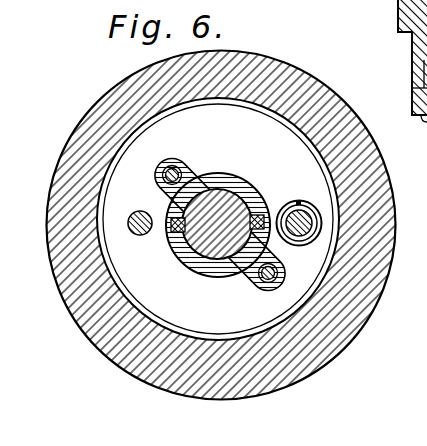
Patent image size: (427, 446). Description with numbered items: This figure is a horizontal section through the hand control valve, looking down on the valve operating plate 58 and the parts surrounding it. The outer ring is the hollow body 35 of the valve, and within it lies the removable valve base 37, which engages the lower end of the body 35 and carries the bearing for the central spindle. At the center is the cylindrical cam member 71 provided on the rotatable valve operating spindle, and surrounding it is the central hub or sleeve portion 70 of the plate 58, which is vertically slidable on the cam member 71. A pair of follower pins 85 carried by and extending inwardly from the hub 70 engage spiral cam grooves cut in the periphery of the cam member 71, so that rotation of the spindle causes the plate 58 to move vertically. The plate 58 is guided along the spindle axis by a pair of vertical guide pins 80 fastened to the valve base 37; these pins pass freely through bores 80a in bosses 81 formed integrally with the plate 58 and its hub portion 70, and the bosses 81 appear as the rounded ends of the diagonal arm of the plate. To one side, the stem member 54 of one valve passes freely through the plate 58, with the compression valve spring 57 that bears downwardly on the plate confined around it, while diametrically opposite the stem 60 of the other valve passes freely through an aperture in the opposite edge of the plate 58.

The hollow body 35 is at (299, 78).
The removable valve base 37 is at (120, 157).
The stem member 54 is at (301, 212).
The compression valve spring 57 is at (300, 238).
The valve operating plate 58 is at (322, 245).
The stem 60 is at (136, 235).
The hub or sleeve portion 70 is at (194, 259).
The cylindrical cam member 71 is at (212, 252).
The vertical guide pins 80 is at (174, 169).
The bores 80a is at (164, 185).
The bosses 81 is at (182, 176).
The follower pins 85 is at (190, 243).